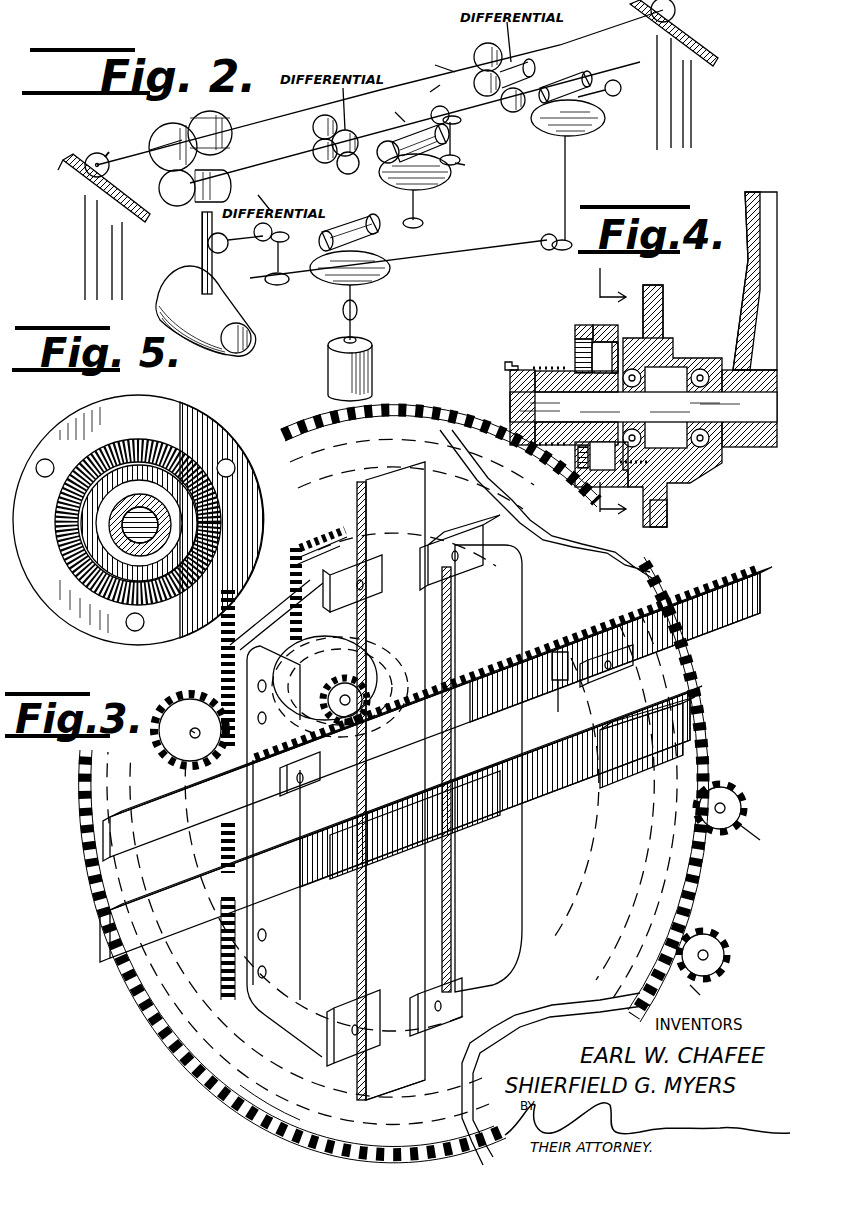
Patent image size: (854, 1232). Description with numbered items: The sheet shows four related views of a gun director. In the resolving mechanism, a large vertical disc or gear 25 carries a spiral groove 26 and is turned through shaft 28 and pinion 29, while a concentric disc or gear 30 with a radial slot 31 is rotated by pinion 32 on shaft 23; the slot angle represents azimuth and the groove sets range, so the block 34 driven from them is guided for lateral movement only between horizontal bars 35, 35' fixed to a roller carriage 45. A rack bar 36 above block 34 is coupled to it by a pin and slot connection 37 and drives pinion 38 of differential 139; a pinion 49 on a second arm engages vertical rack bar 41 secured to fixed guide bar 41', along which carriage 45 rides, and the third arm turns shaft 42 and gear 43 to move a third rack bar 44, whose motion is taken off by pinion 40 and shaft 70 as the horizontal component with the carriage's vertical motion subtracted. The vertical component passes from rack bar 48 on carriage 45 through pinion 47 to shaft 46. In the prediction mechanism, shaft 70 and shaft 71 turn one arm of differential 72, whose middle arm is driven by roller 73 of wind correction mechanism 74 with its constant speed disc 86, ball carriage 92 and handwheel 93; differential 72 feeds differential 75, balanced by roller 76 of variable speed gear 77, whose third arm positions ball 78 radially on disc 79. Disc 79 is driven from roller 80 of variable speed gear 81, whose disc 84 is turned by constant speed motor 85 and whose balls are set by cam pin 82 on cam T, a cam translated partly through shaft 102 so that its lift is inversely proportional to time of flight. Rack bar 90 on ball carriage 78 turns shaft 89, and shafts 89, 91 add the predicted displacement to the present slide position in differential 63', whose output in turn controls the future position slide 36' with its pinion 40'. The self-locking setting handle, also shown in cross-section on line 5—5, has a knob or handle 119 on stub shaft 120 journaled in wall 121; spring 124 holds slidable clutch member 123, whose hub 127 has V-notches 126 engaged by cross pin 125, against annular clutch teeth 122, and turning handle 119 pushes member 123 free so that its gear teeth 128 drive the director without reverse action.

In FIG. 4, the section line 5 is at (611, 399).
In FIG. 3, the shaft 23 is at (710, 955).
In FIG. 3, the large vertical disc or gear 25 is at (394, 784).
In FIG. 3, the spiral groove 26 is at (632, 875).
In FIG. 3, the shaft 28 is at (725, 805).
In FIG. 3, the pinion 29 is at (760, 840).
In FIG. 3, the second disc or gear 30 is at (231, 1105).
In FIG. 3, the radial slot 31 is at (495, 790).
In FIG. 3, the pinion 32 is at (714, 1002).
In FIG. 3, the second block 34 is at (598, 712).
In FIG. 3, the horizontal bar 35 is at (406, 714).
In FIG. 3, the horizontal bar 35' is at (381, 839).
In FIG. 2, the rack bar 36 is at (694, 75).
In FIG. 3, the rack bar 36 is at (507, 647).
In FIG. 2, the slide 36' is at (96, 227).
In FIG. 3, the pin and slot connection 37 is at (556, 715).
In FIG. 3, the pinion 38 is at (365, 690).
In FIG. 2, the pinion 40 is at (688, 15).
In FIG. 2, the pinion 40' is at (104, 145).
In FIG. 3, the vertical rack bar 41 is at (379, 781).
In FIG. 3, the fixed guide bar 41' is at (401, 1101).
In FIG. 3, the shaft 42 is at (220, 657).
In FIG. 3, the gear 43 is at (290, 590).
In FIG. 3, the third rack bar 44 is at (305, 555).
In FIG. 3, the roller carriage 45 is at (488, 768).
In FIG. 3, the shaft 46 is at (178, 745).
In FIG. 3, the pinion 47 is at (160, 732).
In FIG. 3, the rack bar 48 is at (217, 965).
In FIG. 3, the pinion 49 is at (295, 728).
In FIG. 2, the differential 63' is at (212, 191).
In FIG. 2, the shaft 70 is at (434, 59).
In FIG. 2, the shaft 71 is at (424, 88).
In FIG. 2, the differential 72 is at (522, 70).
In FIG. 2, the roller 73 is at (575, 75).
In FIG. 2, the wind correction mechanism 74 is at (518, 112).
In FIG. 2, the second differential 75 is at (330, 165).
In FIG. 2, the roller 76 is at (405, 125).
In FIG. 2, the variable speed gear 77 is at (392, 168).
In FIG. 2, the ball 78 is at (445, 184).
In FIG. 2, the rotated disc 79 is at (426, 209).
In FIG. 2, the roller 80 is at (349, 223).
In FIG. 2, the third variable speed gear 81 is at (296, 273).
In FIG. 2, the cam pin 82 is at (200, 235).
In FIG. 2, the disc 84 is at (390, 268).
In FIG. 2, the constant speed motor 85 is at (372, 350).
In FIG. 2, the disc 86 is at (585, 132).
In FIG. 2, the shaft 89 is at (386, 105).
In FIG. 2, the rack bar 90 is at (465, 140).
In FIG. 2, the shaft 91 is at (218, 141).
In FIG. 2, the ball carriage 92 is at (565, 150).
In FIG. 2, the handwheel 93 is at (618, 95).
In FIG. 2, the shaft 102 is at (238, 345).
In FIG. 4, the knob or handle 119 is at (790, 200).
In FIG. 4, the stub shaft 120 is at (682, 358).
In FIG. 5, the stub shaft 120 is at (150, 560).
In FIG. 4, the wall 121 is at (645, 295).
In FIG. 5, the wall 121 is at (138, 518).
In FIG. 4, the annular clutch teeth 122 is at (600, 330).
In FIG. 5, the annular clutch teeth 122 is at (215, 545).
In FIG. 4, the slidable clutch member 123 is at (575, 468).
In FIG. 4, the spring 124 is at (560, 380).
In FIG. 4, the cross pin 125 is at (680, 360).
In FIG. 4, the V-notches 126 is at (600, 408).
In FIG. 4, the hub 127 is at (599, 356).
In FIG. 5, the hub 127 is at (125, 545).
In FIG. 4, the gear teeth 128 is at (575, 328).
In FIG. 3, the differential 139 is at (340, 675).
In FIG. 2, the cam T is at (155, 270).